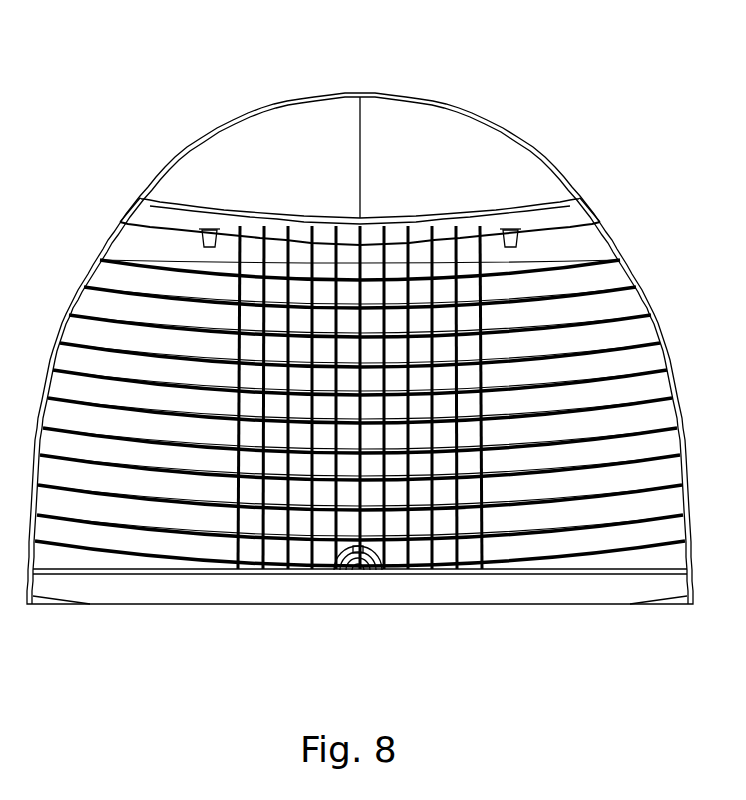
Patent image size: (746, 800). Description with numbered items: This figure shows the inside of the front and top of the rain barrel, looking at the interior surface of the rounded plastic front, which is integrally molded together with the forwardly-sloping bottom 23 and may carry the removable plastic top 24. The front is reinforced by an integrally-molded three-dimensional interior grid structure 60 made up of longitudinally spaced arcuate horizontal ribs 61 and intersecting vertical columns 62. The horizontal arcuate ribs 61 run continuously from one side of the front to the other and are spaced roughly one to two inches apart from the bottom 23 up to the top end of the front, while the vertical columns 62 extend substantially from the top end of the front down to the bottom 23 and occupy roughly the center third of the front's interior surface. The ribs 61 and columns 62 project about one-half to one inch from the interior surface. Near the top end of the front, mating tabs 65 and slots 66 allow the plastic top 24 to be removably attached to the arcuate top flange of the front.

The forwardly-sloping bottom 23 is at (635, 567).
The top 24 is at (323, 138).
The interior grid structure 60 is at (306, 195).
The arcuate horizontal ribs 61 is at (62, 403).
The vertical columns 62 is at (262, 527).
The tabs 65 is at (222, 238).
The slots 66 is at (206, 229).